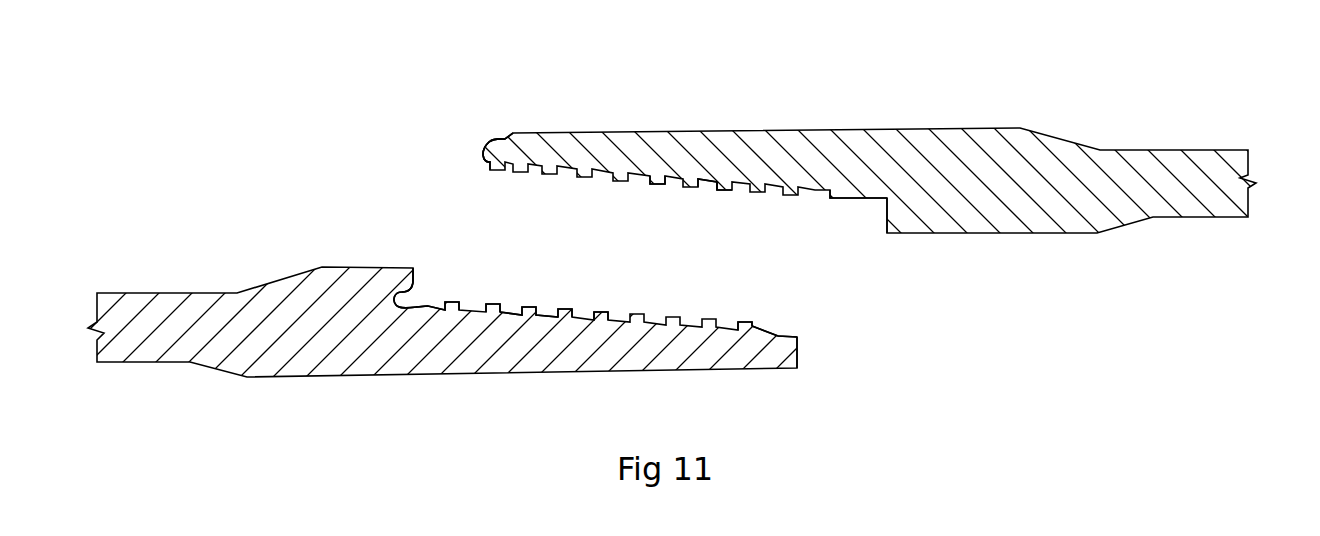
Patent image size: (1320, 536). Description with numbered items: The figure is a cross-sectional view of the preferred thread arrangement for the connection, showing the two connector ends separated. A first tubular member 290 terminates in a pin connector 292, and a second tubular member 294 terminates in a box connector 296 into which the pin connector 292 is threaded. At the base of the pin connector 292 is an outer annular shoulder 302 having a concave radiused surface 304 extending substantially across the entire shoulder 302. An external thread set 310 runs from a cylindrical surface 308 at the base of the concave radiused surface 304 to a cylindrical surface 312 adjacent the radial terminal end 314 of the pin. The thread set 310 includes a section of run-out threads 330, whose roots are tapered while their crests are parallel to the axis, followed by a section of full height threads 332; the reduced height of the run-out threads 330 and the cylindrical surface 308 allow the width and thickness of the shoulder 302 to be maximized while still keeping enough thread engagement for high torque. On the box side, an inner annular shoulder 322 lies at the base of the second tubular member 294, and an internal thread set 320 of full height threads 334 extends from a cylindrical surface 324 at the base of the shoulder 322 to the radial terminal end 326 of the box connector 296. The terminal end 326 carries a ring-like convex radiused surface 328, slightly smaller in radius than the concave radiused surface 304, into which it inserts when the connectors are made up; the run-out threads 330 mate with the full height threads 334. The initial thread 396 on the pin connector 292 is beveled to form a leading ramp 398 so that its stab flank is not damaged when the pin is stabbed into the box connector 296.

The first tubular member 290 is at (320, 362).
The pin connector 292 is at (531, 292).
The second tubular member 294 is at (1047, 223).
The box connector 296 is at (729, 200).
The outer annular shoulder 302 is at (434, 278).
The concave radiused surface 304 is at (423, 285).
The cylindrical surface 308 is at (425, 303).
The external thread set 310 is at (563, 303).
The cylindrical surface 312 is at (780, 331).
The radial terminal end 314 is at (798, 355).
The internal thread set 320 is at (710, 193).
The inner annular shoulder 322 is at (887, 220).
The cylindrical surface 324 is at (858, 198).
The radial terminal end 326 is at (488, 128).
The convex radiused surface 328 is at (485, 148).
The run-out threads 330 is at (476, 316).
The full height threads 332 is at (599, 325).
The full height threads 334 is at (672, 172).
The initial thread 396 is at (740, 318).
The leading ramp 398 is at (748, 330).